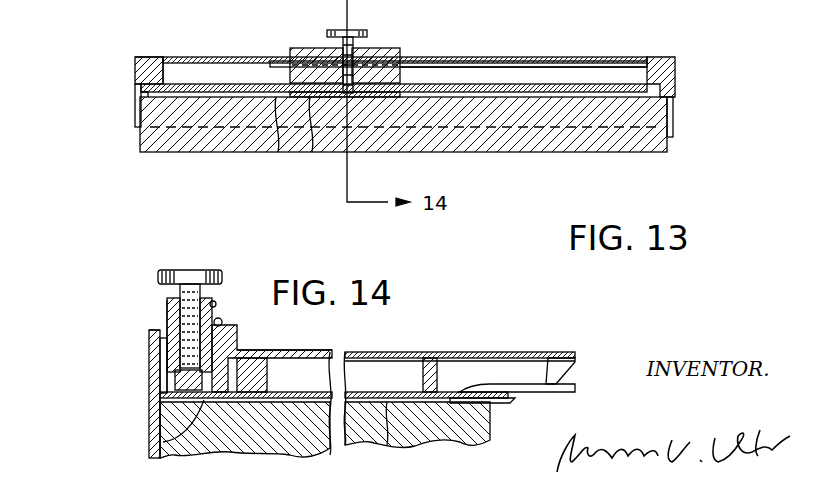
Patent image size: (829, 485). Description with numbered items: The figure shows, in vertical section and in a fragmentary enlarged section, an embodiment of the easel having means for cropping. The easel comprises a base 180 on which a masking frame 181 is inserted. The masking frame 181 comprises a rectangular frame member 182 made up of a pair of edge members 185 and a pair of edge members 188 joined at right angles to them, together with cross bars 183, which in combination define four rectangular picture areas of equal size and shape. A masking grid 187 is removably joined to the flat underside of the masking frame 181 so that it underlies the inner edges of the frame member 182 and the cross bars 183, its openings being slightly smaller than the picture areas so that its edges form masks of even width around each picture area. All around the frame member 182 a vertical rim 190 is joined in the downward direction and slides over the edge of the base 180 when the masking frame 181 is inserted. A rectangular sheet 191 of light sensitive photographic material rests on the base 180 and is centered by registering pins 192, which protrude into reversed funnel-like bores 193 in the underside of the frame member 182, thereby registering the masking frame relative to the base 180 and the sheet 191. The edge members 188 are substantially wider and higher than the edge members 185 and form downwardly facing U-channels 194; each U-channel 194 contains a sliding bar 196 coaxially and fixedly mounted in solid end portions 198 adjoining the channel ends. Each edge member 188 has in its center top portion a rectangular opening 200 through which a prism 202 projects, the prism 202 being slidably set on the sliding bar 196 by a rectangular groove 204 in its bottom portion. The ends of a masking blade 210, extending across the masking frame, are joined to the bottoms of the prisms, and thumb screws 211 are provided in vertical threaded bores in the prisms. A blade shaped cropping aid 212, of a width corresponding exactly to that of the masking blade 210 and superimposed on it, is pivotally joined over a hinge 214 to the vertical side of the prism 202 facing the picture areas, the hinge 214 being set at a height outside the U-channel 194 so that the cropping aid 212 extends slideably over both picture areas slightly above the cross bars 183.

In FIG. 13, the base 180 is at (172, 152).
In FIG. 14, the base 180 is at (488, 443).
In FIG. 13, the masking frame 181 is at (703, 76).
In FIG. 14, the masking frame 181 is at (112, 343).
In FIG. 13, the rectangular frame member 182 is at (128, 76).
In FIG. 14, the cross bars 183 is at (437, 365).
In FIG. 13, the edge members 185 is at (138, 70).
In FIG. 14, the masking grid 187 is at (548, 393).
In FIG. 13, the edge members 188 is at (443, 78).
In FIG. 14, the edge members 188 is at (149, 343).
In FIG. 13, the vertical rim 190 is at (134, 105).
In FIG. 14, the vertical rim 190 is at (149, 410).
In FIG. 14, the rectangular sheet 191 is at (506, 403).
In FIG. 14, the registering pins 192 is at (235, 455).
In FIG. 14, the reversed funnel-like bores 193 is at (275, 357).
In FIG. 13, the U-channels 194 is at (195, 57).
In FIG. 14, the U-channels 194 is at (164, 357).
In FIG. 13, the sliding bar 196 is at (228, 84).
In FIG. 14, the sliding bar 196 is at (158, 424).
In FIG. 13, the solid end portions 198 is at (140, 89).
In FIG. 13, the rectangular opening 200 is at (505, 64).
In FIG. 14, the rectangular opening 200 is at (166, 335).
In FIG. 13, the prism 202 is at (295, 48).
In FIG. 14, the prism 202 is at (213, 299).
In FIG. 13, the rectangular groove 204 is at (272, 152).
In FIG. 14, the rectangular groove 204 is at (163, 442).
In FIG. 13, the masking blade 210 is at (312, 152).
In FIG. 14, the masking blade 210 is at (387, 445).
In FIG. 14, the thumb screws 211 is at (186, 270).
In FIG. 13, the cropping aid 212 is at (360, 32).
In FIG. 14, the cropping aid 212 is at (510, 352).
In FIG. 14, the hinge 214 is at (224, 322).